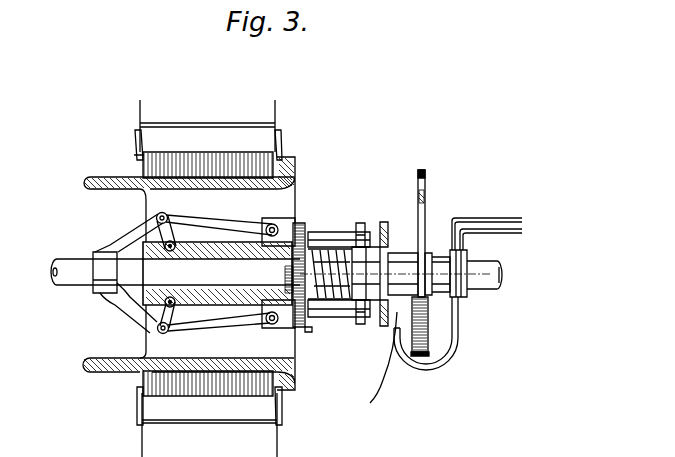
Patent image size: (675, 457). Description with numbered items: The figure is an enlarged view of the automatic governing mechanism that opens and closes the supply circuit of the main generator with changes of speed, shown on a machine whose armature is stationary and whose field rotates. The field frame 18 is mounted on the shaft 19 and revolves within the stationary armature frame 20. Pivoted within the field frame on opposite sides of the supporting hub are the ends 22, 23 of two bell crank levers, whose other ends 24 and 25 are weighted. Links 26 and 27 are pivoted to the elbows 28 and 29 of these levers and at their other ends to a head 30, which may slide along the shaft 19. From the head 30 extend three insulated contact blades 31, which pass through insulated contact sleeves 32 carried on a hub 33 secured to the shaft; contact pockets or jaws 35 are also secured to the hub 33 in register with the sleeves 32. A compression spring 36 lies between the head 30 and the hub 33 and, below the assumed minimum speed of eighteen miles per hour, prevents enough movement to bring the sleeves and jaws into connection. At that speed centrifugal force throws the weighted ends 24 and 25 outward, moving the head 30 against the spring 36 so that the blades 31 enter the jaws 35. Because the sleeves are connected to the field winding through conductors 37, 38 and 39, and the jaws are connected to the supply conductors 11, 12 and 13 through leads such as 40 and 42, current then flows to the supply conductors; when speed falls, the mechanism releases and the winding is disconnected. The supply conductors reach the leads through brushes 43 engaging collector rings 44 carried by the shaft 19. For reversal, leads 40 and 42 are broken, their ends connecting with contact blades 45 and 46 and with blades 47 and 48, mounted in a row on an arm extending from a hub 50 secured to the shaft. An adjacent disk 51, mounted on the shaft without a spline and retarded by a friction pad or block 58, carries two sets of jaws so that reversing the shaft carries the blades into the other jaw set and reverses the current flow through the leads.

The supply conductor 11 is at (462, 216).
The supply conductor 12 is at (480, 228).
The supply conductor 13 is at (512, 216).
The field frame 18 is at (152, 134).
The shaft 19 is at (58, 261).
The stationary armature frame 20 is at (255, 114).
The end of bell crank lever 22 is at (160, 312).
The end of bell crank lever 23 is at (130, 231).
The weighted end 24 is at (102, 296).
The weighted end 25 is at (100, 253).
The link 26 is at (196, 329).
The link 27 is at (231, 226).
The elbow 28 is at (161, 334).
The elbow 29 is at (159, 215).
The head 30 is at (320, 237).
The contact blade 31 is at (343, 247).
The contact sleeve 32 is at (358, 222).
The hub 33 is at (382, 222).
The contact jaw 35 is at (380, 303).
The compression spring 36 is at (347, 298).
The conductor 37 is at (297, 223).
The conductor 38 is at (320, 318).
The conductor 39 is at (305, 332).
The lead 40 is at (463, 338).
The lead 42 is at (455, 326).
The brush 43 is at (465, 248).
The collector ring 44 is at (526, 279).
The contact blade 45 is at (371, 406).
The contact blade 46 is at (430, 353).
The contact blade 47 is at (450, 300).
The contact blade 48 is at (397, 312).
The hub 50 is at (408, 250).
The disk 51 is at (424, 206).
The friction pad 58 is at (423, 178).